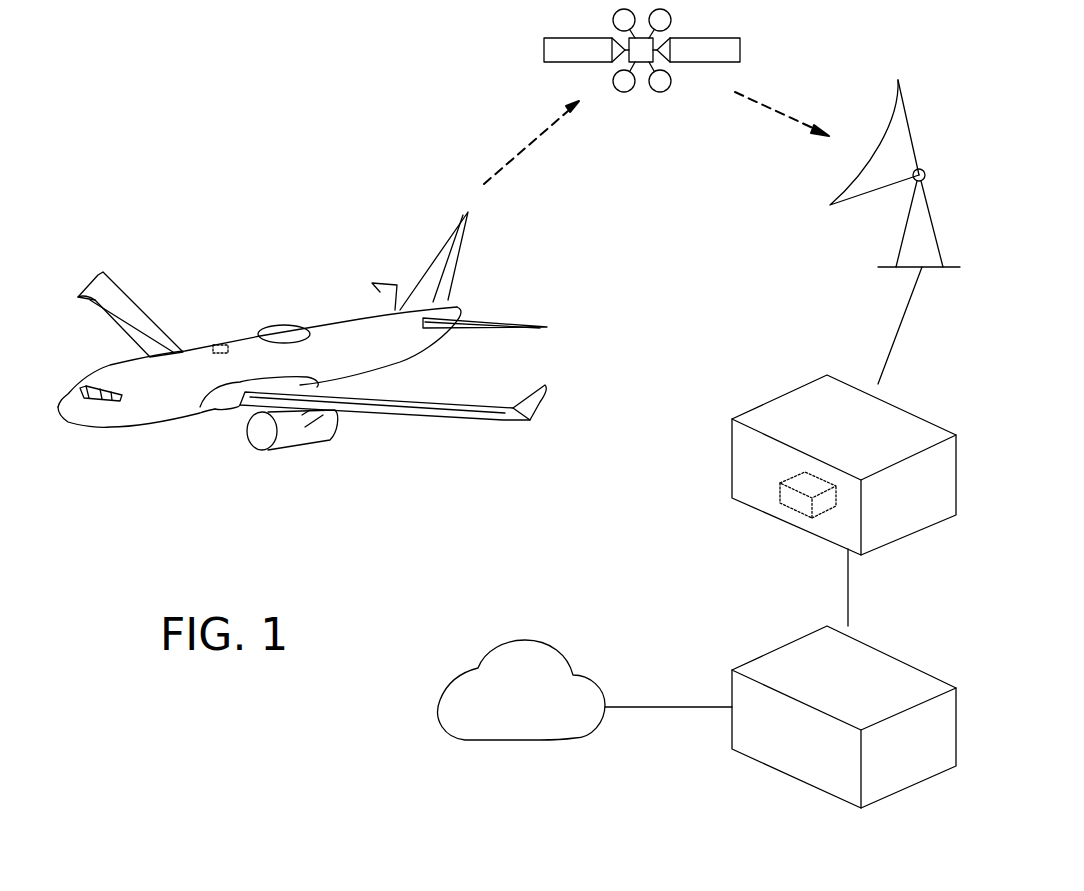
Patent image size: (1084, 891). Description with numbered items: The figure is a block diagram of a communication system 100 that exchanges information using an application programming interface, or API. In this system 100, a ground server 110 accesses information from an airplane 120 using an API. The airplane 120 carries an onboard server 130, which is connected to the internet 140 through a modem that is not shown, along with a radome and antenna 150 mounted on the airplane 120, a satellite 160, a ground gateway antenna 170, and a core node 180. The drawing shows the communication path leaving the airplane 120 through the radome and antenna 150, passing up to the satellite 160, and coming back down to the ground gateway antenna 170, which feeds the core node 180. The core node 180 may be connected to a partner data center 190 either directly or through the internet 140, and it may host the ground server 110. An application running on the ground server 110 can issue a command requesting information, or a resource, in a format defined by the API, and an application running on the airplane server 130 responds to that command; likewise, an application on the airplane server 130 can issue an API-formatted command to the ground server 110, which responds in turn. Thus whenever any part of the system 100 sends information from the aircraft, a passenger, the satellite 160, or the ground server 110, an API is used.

The system 100 is at (190, 74).
The ground server 110 is at (790, 503).
The airplane 120 is at (77, 427).
The server 130 is at (220, 345).
The internet 140 is at (522, 642).
The radome and antenna 150 is at (290, 325).
The satellite 160 is at (544, 48).
The ground gateway antenna 170 is at (845, 203).
The core node 180 is at (865, 441).
The partner data center 190 is at (865, 696).